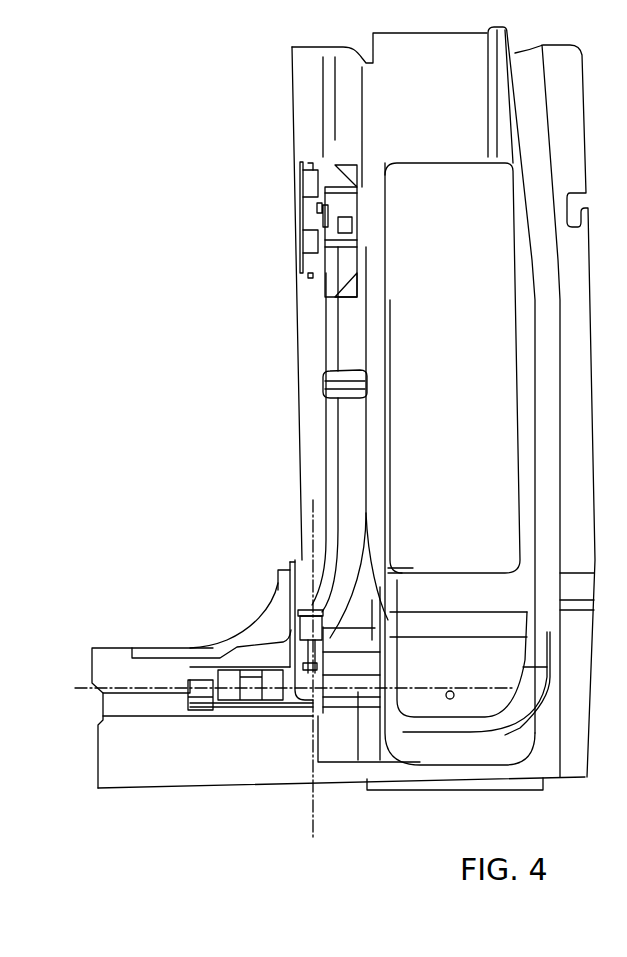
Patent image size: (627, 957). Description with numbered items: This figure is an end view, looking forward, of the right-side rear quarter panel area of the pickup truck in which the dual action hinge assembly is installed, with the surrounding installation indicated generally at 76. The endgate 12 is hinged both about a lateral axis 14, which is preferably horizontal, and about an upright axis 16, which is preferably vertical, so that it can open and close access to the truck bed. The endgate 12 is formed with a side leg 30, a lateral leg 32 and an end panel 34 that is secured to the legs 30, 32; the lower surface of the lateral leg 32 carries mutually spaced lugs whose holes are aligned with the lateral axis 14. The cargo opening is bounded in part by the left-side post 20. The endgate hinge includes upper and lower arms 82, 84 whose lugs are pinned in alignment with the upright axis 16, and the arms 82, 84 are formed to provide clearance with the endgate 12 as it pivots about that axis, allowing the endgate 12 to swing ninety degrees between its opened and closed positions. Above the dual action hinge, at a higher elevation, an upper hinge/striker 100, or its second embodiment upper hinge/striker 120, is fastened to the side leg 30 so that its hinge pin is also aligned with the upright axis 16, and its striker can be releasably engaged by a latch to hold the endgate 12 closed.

The vehicle body assembly 76 is at (118, 175).
The left-side post 20 is at (297, 338).
The upper hinge/striker 100 is at (258, 229).
The upper hinge/striker 120 is at (307, 208).
The endgate 12 is at (194, 577).
The lateral leg 32 is at (90, 664).
The end panel 34 is at (273, 588).
The side leg 30 is at (277, 590).
The upper arm 82 is at (388, 635).
The lower arm 84 is at (350, 693).
The lateral axis 14 is at (78, 690).
The upright axis 16 is at (313, 800).